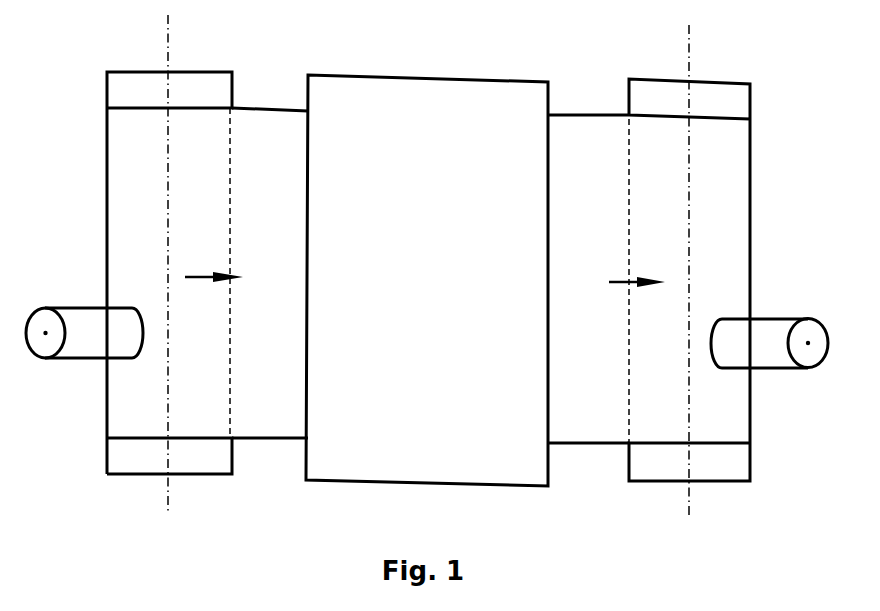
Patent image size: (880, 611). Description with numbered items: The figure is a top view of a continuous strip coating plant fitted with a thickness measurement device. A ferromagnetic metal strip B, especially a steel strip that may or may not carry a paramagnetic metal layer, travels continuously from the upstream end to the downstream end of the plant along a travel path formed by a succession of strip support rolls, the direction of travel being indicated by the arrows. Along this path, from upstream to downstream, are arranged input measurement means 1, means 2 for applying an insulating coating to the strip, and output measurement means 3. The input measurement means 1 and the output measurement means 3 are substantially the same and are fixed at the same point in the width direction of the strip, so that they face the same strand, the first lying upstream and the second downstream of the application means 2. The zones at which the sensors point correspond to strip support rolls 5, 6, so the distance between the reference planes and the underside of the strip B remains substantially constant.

The input measurement means 1 is at (81, 345).
The means for applying an insulating coating 2 is at (518, 462).
The output measurement means 3 is at (768, 350).
The strip support roll 5 is at (138, 86).
The strip support roll 6 is at (720, 98).
The ferromagnetic metal strip B is at (277, 420).